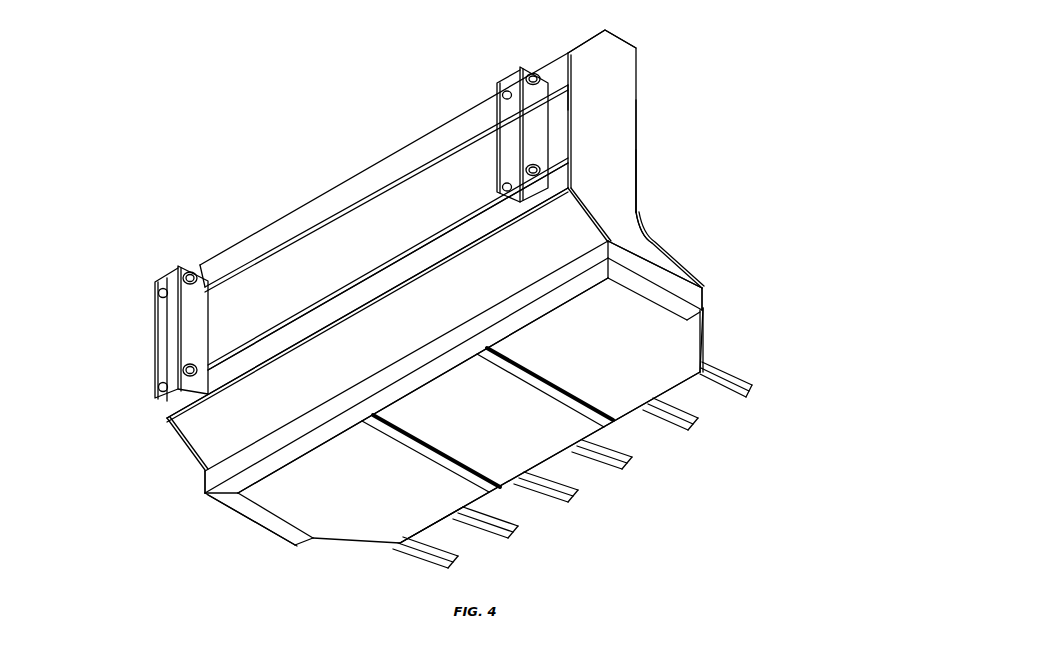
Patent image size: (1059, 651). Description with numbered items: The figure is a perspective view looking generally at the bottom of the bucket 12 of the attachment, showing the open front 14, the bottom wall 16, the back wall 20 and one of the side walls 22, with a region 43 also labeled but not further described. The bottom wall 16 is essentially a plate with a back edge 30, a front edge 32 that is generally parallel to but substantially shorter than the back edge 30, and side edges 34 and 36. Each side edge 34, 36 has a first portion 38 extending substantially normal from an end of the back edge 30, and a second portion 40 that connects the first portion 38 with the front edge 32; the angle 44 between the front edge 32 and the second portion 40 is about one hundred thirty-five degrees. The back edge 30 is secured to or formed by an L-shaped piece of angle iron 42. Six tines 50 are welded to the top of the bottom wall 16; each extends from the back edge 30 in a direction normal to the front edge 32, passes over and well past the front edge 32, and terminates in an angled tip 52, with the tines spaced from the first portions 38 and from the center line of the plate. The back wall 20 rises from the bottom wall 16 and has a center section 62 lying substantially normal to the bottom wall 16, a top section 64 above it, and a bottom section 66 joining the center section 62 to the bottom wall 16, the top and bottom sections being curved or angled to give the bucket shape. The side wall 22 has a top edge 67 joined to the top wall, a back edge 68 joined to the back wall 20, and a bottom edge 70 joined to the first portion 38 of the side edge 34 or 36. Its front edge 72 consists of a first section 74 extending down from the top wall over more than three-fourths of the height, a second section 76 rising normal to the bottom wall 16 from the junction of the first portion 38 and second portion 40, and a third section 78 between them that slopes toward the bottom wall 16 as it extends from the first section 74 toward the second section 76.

The bucket 12 is at (206, 429).
The open front 14 is at (351, 234).
The bottom wall 16 is at (469, 410).
The back wall 20 is at (312, 251).
The first side wall 22 is at (636, 159).
The back edge 30 is at (460, 350).
The front edge 32 is at (648, 321).
The side edge 34 is at (718, 316).
The side edge 36 is at (294, 559).
The first portion 38 is at (657, 290).
The second portion 40 is at (365, 543).
The L-shaped piece of angle iron 42 is at (402, 377).
The end region 43 is at (168, 503).
The angle 44 is at (400, 543).
The tines 50 is at (715, 365).
The angled tip 52 is at (752, 393).
The center section 62 is at (388, 264).
The top section 64 is at (390, 168).
The bottom section 66 is at (367, 290).
The top edge 67 is at (620, 33).
The back edge 68 is at (568, 100).
The bottom edge 70 is at (658, 260).
The front edge 72 is at (650, 162).
The first section 74 is at (642, 190).
The second section 76 is at (708, 305).
The third section 78 is at (658, 245).